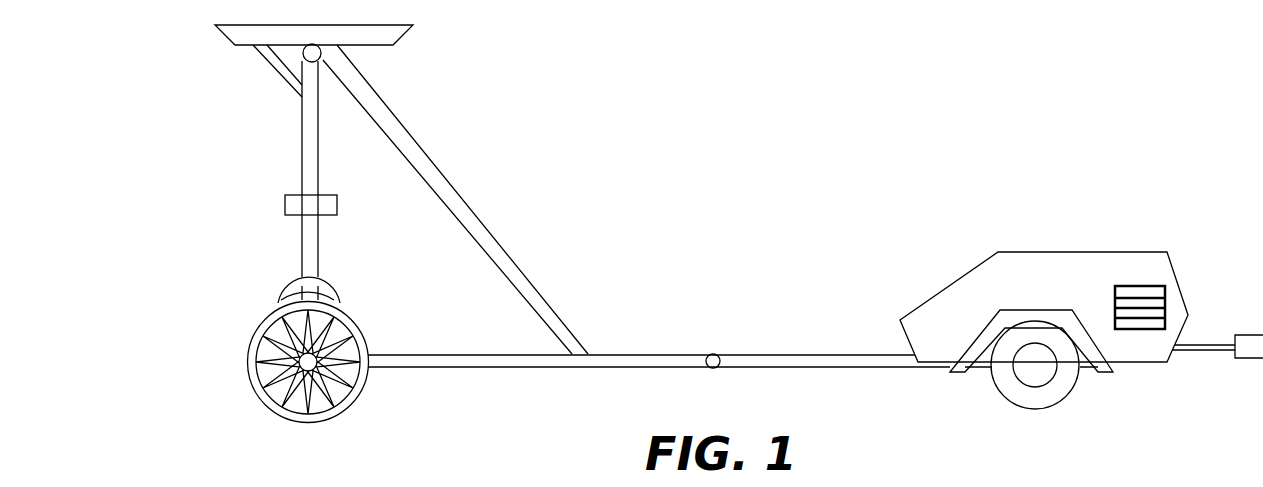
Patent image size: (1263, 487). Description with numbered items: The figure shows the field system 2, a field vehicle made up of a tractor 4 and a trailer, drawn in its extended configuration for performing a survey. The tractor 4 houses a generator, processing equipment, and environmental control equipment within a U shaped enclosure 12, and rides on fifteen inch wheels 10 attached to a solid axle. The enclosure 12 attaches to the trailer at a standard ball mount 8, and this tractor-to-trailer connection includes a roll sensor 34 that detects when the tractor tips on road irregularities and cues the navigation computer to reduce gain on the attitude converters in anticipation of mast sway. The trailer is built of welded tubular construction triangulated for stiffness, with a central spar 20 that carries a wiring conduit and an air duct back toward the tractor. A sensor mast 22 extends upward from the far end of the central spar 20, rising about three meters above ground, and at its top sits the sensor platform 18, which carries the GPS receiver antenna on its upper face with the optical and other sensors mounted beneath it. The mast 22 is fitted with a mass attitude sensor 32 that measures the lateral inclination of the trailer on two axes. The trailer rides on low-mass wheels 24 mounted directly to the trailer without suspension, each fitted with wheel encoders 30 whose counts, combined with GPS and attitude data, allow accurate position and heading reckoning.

The field system 2 is at (740, 178).
The tractor 4 is at (1030, 305).
The ball mount 8 is at (708, 354).
The wheels 10 is at (1005, 377).
The U shaped enclosure 12 is at (943, 292).
The sensor platform 18 is at (362, 38).
The central spar 20 is at (431, 354).
The sensor mast 22 is at (302, 136).
The low-mass wheels 24 is at (254, 330).
The wheel encoders 30 is at (328, 283).
The mass attitude sensor 32 is at (337, 199).
The roll sensor 34 is at (1258, 337).